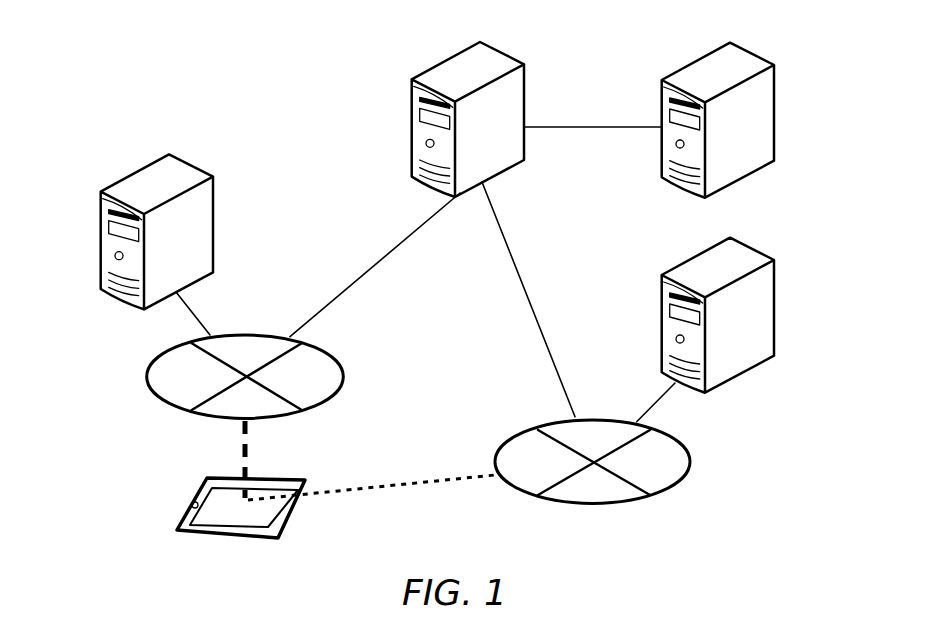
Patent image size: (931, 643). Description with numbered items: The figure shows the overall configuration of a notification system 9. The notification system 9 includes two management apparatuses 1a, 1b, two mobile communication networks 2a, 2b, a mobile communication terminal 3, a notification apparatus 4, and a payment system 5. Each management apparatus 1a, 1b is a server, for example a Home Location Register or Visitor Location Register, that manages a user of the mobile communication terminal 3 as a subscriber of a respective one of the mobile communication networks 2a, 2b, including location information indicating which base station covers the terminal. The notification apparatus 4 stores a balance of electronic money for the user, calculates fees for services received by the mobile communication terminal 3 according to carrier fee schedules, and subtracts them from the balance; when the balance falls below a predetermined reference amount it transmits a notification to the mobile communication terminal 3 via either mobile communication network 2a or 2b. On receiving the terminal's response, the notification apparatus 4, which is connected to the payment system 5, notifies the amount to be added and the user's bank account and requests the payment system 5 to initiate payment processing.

The notification system 9 is at (283, 97).
The management apparatus 1a is at (217, 218).
The management apparatus 1b is at (662, 292).
The mobile communication network 2a is at (343, 362).
The mobile communication network 2b is at (610, 417).
The mobile communication terminal 3 is at (303, 482).
The notification apparatus 4 is at (410, 127).
The payment system 5 is at (661, 93).